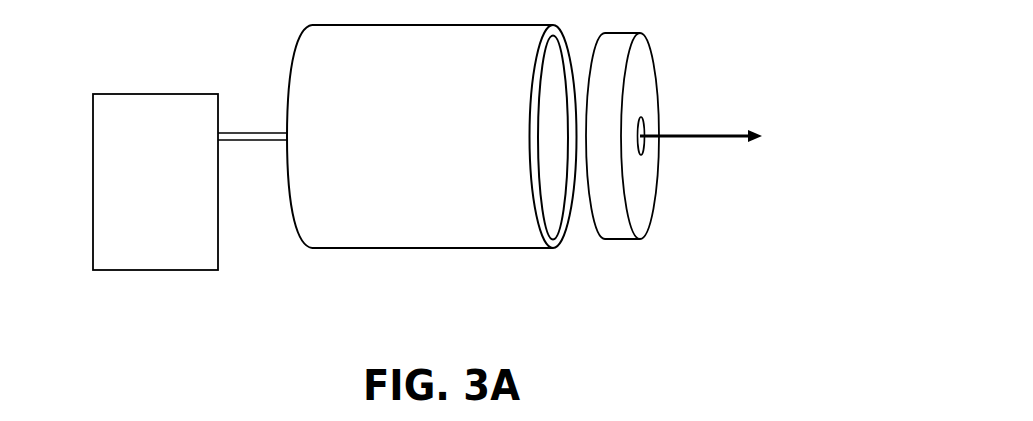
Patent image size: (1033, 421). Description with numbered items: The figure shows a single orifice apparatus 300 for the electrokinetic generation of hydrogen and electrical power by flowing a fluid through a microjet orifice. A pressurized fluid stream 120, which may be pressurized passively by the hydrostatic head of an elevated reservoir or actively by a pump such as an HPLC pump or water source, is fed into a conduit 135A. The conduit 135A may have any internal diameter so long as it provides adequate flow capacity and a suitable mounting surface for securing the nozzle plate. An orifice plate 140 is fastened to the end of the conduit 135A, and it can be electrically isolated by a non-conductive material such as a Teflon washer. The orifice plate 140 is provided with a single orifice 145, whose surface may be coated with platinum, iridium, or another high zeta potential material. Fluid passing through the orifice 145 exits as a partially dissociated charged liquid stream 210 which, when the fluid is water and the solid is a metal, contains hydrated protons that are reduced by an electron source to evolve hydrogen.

The single orifice apparatus 300 is at (228, 302).
The pressurized fluid stream 120 is at (249, 143).
The conduit 135A is at (358, 249).
The orifice plate 140 is at (652, 42).
The orifice 145 is at (642, 153).
The partially dissociated charged liquid stream 210 is at (718, 130).